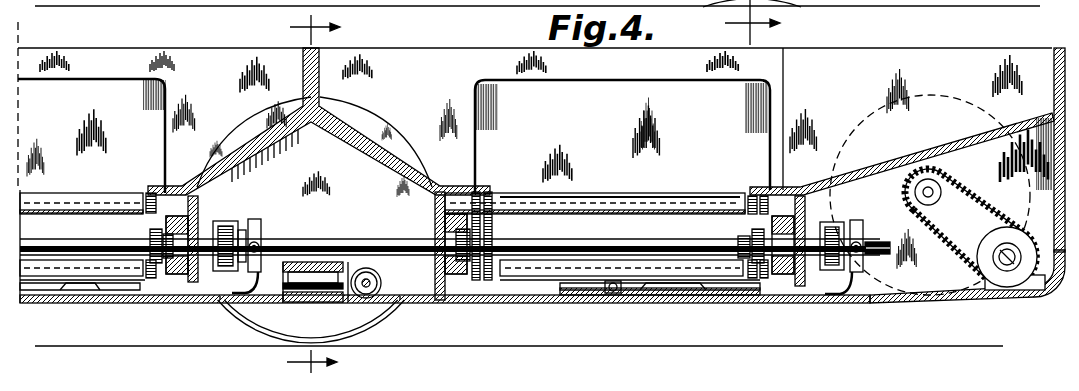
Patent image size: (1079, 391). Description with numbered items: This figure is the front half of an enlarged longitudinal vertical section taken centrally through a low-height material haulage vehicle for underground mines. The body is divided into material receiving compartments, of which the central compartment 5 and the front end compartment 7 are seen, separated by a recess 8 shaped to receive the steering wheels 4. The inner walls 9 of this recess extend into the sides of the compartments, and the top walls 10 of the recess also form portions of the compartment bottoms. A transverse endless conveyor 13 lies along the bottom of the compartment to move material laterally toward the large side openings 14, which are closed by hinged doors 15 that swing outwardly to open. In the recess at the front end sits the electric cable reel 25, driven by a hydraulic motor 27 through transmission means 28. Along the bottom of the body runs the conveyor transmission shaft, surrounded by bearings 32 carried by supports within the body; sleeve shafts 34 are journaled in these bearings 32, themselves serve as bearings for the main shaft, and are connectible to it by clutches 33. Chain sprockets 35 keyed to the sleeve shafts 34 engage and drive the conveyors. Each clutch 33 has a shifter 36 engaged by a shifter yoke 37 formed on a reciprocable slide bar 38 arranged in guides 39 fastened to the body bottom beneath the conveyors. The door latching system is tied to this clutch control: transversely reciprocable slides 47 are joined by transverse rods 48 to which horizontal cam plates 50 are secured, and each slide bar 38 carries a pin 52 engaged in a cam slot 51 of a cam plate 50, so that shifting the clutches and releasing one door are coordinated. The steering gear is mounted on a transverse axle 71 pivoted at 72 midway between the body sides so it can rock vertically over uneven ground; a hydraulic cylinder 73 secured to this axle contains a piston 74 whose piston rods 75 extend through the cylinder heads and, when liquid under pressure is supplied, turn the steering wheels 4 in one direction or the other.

The steering wheels 4 is at (372, 312).
The central compartment 5 is at (208, 70).
The end compartment 7 is at (905, 46).
The recesses 8 is at (321, 194).
The inner walls 9 is at (230, 137).
The top walls 10 is at (255, 127).
The endless conveyor 13 is at (667, 197).
The side openings 14 is at (150, 88).
The doors 15 is at (630, 103).
The electric cable reel 25 is at (957, 101).
The motor 27 is at (1003, 230).
The transmission means 28 is at (972, 250).
The bearings 32 is at (187, 273).
The clutches 33 is at (233, 220).
The sleeve shafts 34 is at (112, 235).
The chain sprockets 35 is at (197, 200).
The shifter 36 is at (263, 223).
The shifter yoke 37 is at (237, 296).
The slide bars 38 is at (185, 265).
The guides 39 is at (127, 290).
The slides 47 is at (608, 286).
The transverse rods 48 is at (607, 293).
The cam plates 50 is at (55, 300).
The cam slots 51 is at (98, 285).
The pin 52 is at (66, 278).
The axle 71 is at (213, 298).
The pivot 72 is at (353, 302).
The hydraulic cylinder 73 is at (377, 273).
The piston 74 is at (382, 290).
The piston rods 75 is at (367, 278).